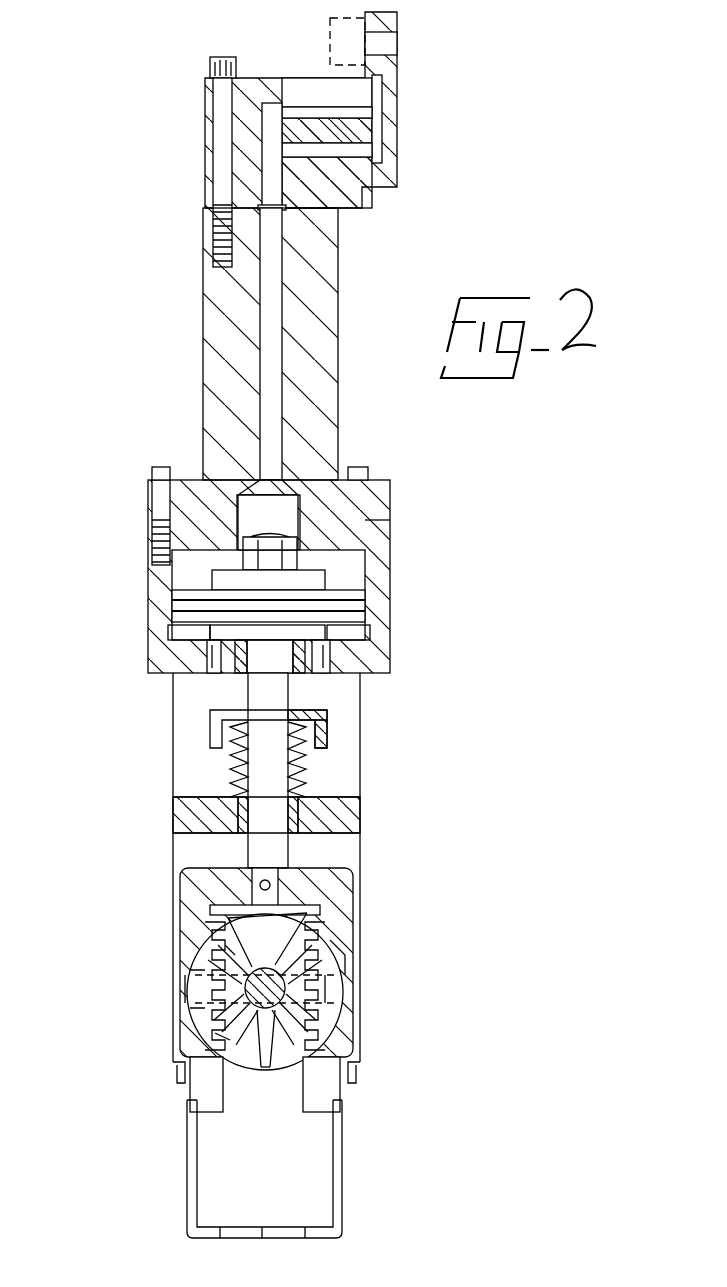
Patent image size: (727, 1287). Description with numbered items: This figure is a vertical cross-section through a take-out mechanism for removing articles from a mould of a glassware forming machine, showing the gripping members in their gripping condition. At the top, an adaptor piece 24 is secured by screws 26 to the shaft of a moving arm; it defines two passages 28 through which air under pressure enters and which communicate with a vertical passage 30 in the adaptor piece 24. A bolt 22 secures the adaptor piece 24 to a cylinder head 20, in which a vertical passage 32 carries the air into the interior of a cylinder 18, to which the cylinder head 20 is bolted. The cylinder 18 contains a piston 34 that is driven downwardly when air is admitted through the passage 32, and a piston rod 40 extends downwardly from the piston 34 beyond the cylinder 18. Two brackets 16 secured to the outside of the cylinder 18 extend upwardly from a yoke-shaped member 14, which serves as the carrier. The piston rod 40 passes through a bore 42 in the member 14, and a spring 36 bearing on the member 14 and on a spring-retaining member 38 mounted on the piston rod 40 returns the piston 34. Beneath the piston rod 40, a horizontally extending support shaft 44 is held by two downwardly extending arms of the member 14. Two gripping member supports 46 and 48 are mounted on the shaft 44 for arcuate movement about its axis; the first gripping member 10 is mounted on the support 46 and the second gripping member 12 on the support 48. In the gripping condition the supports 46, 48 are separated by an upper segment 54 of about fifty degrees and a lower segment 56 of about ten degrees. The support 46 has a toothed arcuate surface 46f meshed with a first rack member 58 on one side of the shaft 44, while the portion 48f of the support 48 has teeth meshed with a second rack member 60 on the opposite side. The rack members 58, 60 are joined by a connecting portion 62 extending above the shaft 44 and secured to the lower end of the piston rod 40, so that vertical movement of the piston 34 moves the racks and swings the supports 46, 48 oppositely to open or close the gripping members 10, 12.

The first gripping member 10 is at (335, 1202).
The second gripping member 12 is at (193, 1180).
The yoke-shaped member 14 is at (185, 812).
The brackets 16 is at (190, 700).
The cylinder 18 is at (160, 590).
The cylinder head 20 is at (216, 357).
The bolt 22 is at (232, 58).
The adaptor piece 24 is at (343, 186).
The screws 26 is at (350, 42).
The passages 28 is at (306, 150).
The passage 30 is at (266, 170).
The vertical passage 32 is at (274, 340).
The piston 34 is at (352, 596).
The spring 36 is at (240, 765).
The spring-retaining member 38 is at (320, 730).
The piston rod 40 is at (272, 692).
The bore 42 is at (285, 820).
The support shaft 44 is at (258, 1010).
The gripping member support 46 is at (318, 1025).
The arcuate surface 46f is at (300, 1028).
The gripping member support 48 is at (247, 972).
The arcuate toothed portion 48f is at (215, 1033).
The upper segment 54 is at (262, 937).
The lower segment 56 is at (265, 1070).
The first rack member 58 is at (345, 955).
The second rack member 60 is at (212, 995).
The connecting portion 62 is at (318, 887).